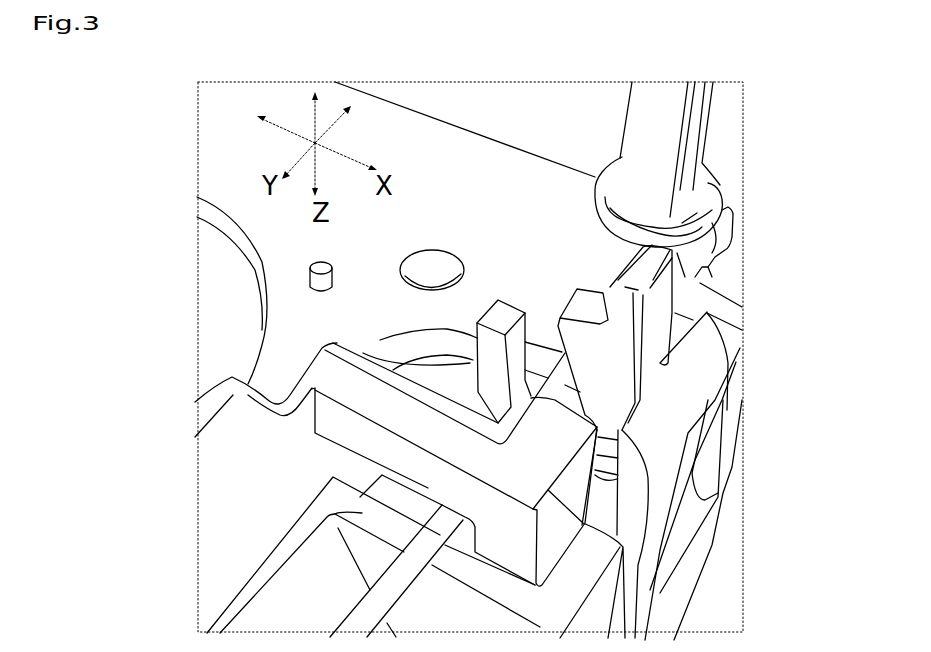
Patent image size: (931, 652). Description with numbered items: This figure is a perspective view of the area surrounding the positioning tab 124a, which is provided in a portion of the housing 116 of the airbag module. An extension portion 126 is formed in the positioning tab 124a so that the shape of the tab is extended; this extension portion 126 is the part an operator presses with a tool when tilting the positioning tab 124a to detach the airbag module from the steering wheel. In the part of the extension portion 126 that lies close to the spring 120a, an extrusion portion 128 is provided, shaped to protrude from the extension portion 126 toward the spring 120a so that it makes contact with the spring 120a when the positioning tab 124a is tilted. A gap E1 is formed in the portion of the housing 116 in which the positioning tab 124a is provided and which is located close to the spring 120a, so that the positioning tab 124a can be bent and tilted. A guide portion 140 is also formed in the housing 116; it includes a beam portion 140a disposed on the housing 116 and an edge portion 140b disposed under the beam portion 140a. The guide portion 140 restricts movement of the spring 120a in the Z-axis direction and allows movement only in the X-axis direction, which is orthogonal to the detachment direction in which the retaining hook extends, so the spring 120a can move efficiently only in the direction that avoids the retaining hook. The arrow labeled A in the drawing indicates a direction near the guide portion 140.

The housing 116 is at (488, 146).
The spring 120a is at (401, 585).
The positioning tab 124a is at (707, 368).
The extension portion 126 is at (665, 289).
The extrusion portion 128 is at (557, 325).
The guide portion 140 is at (349, 469).
The beam portion 140a is at (337, 446).
The edge portion 140b is at (362, 513).
The gap E1 is at (467, 390).
The direction A is at (606, 377).